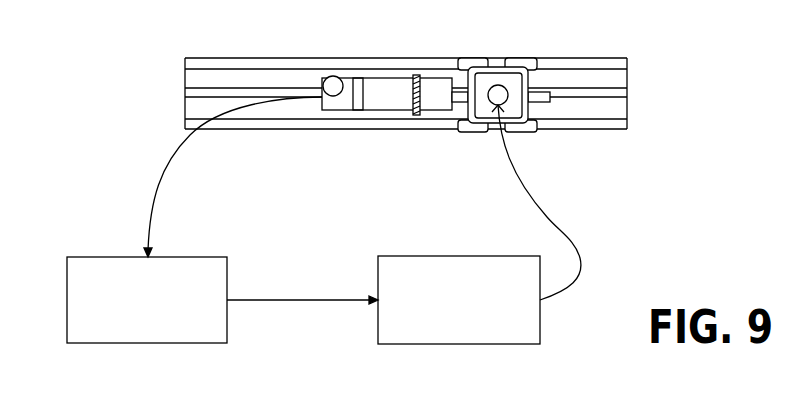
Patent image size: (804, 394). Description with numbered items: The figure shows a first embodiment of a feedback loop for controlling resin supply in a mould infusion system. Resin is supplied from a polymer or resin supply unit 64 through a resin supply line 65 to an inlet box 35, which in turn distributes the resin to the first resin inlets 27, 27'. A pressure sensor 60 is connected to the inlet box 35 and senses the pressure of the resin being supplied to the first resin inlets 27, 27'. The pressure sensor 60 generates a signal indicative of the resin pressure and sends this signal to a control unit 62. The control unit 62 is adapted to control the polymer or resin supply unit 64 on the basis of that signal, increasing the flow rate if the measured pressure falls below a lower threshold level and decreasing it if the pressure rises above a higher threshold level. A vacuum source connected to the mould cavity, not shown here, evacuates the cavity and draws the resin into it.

The first resin inlet 27 is at (443, 78).
The first resin inlet 27' is at (453, 120).
The pressure sensor 60 is at (385, 88).
The inlet box 35 is at (533, 133).
The resin supply line 65 is at (567, 235).
The control unit 62 is at (162, 313).
The polymer or resin supply unit 64 is at (473, 313).